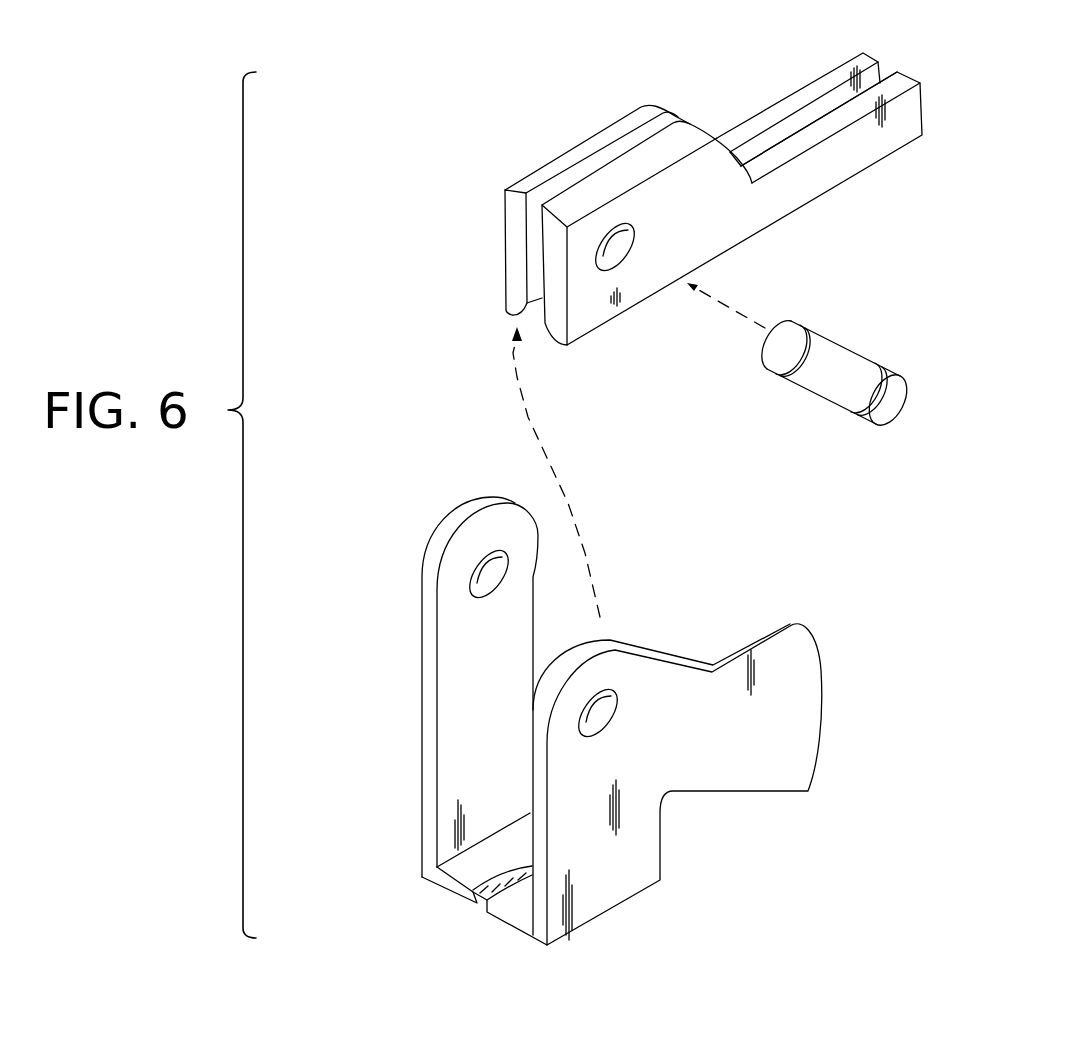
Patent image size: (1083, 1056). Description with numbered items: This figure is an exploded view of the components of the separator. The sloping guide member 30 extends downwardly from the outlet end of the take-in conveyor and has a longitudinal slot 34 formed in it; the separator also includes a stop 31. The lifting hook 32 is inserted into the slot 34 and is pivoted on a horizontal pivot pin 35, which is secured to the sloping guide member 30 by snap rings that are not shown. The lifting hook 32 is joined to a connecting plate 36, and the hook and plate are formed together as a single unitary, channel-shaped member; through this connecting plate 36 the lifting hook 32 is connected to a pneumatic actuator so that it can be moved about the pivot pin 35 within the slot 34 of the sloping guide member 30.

The sloping guide member 30 is at (714, 187).
The stop 31 is at (757, 148).
The lifting hook 32 is at (720, 793).
The longitudinal slot 34 is at (798, 118).
The horizontal pivot pin 35 is at (858, 352).
The connecting plate 36 is at (422, 816).